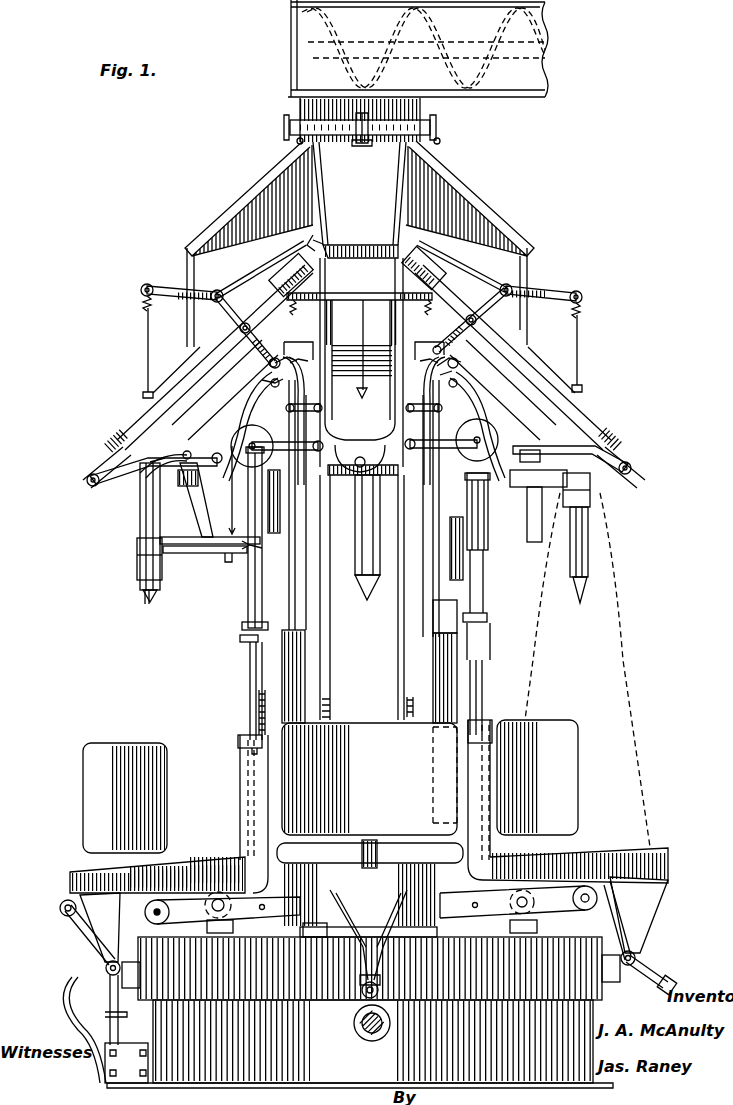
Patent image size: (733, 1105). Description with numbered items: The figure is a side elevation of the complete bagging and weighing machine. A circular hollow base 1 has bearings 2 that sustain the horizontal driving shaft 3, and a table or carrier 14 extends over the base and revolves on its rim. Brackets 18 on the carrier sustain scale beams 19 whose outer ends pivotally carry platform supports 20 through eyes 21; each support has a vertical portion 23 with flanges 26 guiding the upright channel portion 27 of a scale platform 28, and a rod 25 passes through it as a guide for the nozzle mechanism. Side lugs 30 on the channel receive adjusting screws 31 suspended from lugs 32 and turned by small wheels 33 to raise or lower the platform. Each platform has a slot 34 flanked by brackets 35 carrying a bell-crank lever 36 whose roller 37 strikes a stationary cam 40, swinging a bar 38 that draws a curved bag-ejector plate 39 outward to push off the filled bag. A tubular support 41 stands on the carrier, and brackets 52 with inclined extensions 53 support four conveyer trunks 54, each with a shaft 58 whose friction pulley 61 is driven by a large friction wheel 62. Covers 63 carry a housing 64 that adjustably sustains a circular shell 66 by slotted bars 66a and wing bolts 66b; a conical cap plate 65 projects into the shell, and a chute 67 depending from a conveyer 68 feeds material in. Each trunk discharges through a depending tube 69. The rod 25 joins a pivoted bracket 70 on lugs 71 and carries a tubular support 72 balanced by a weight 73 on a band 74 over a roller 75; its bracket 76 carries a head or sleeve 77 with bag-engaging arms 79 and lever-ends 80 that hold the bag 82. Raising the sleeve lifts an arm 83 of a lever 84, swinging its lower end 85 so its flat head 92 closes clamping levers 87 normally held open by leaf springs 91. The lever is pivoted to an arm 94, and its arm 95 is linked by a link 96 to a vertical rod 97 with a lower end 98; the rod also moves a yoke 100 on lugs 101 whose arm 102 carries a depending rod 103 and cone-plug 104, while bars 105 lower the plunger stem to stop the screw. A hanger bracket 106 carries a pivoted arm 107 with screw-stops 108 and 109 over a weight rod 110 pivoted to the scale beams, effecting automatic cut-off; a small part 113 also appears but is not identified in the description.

The circular hollow base 1 is at (360, 1044).
The bearings 2 is at (355, 1022).
The horizontal driving shaft 3 is at (372, 1034).
The table or carrier 14 is at (600, 990).
The brackets 18 is at (535, 917).
The scale beams 19 is at (372, 906).
The platform supports 20 is at (477, 903).
The circular bearings or eyes 21 is at (147, 918).
The vertical portion 23 is at (253, 700).
The rod 25 is at (263, 550).
The vertical lugs or flanges 26 is at (255, 680).
The upright channel portion 27 is at (240, 778).
The scale platforms 28 is at (223, 857).
The perforated side lugs 30 is at (240, 742).
The vertical adjusting screws 31 is at (258, 660).
The side lugs 32 is at (240, 639).
The small wheels 33 is at (242, 626).
The slots 34 is at (585, 855).
The downwardly-extending brackets 35 is at (97, 918).
The bell-crank lever 36 is at (80, 940).
The roller 37 is at (108, 970).
The bar 38 is at (64, 905).
The curved bag-ejector plate 39 is at (93, 797).
The stationary cam or track 40 is at (62, 990).
The column or tubular support 41 is at (393, 605).
The brackets 52 is at (364, 333).
The downwardly-inclined extensions 53 is at (205, 395).
The conveyer trunks 54 is at (532, 370).
The shaft 58 is at (378, 845).
The beveled friction pulley 61 is at (285, 262).
The large friction wheel 62 is at (324, 277).
The casings or covers 63 is at (152, 398).
The housing 64 is at (359, 244).
The conical cap plate 65 is at (377, 388).
The circular shell 66 is at (290, 127).
The vertically-slotted bars 66a is at (437, 122).
The wing bolts 66b is at (441, 141).
The chute 67 is at (300, 107).
The conveyer 68 is at (527, 77).
The depending tube 69 is at (140, 522).
The pivoted bracket 70 is at (287, 443).
The lugs 71 is at (348, 474).
The tubular support 72 is at (250, 600).
The counter-balance weight 73 is at (463, 570).
The band 74 is at (232, 500).
The roller 75 is at (247, 434).
The bracket 76 is at (228, 558).
The head or sleeve 77 is at (137, 553).
The bag-engaging arms 79 is at (147, 598).
The lever-end 80 is at (590, 490).
The bag 82 is at (625, 662).
The arm 83 is at (93, 486).
The lever 84 is at (178, 480).
The lower end 85 is at (205, 505).
The clamping levers 87 is at (210, 531).
The flat leaf springs 91 is at (188, 556).
The broad flat head 92 is at (150, 470).
The arm 94 is at (163, 458).
The arm 95 is at (213, 412).
The link 96 is at (456, 360).
The vertical rod 97 is at (307, 657).
The lower end 98 is at (318, 912).
The yoke 100 is at (273, 328).
The lugs 101 is at (233, 290).
The arm 102 is at (187, 290).
The depending rod 103 is at (147, 340).
The cone-plug 104 is at (143, 592).
The bars 105 is at (600, 390).
The hanger bracket 106 is at (348, 378).
The arm 107 is at (310, 362).
The screw-stop 108 is at (350, 396).
The screw-stop 109 is at (306, 380).
The weight rod 110 is at (289, 578).
The pin 113 is at (249, 906).